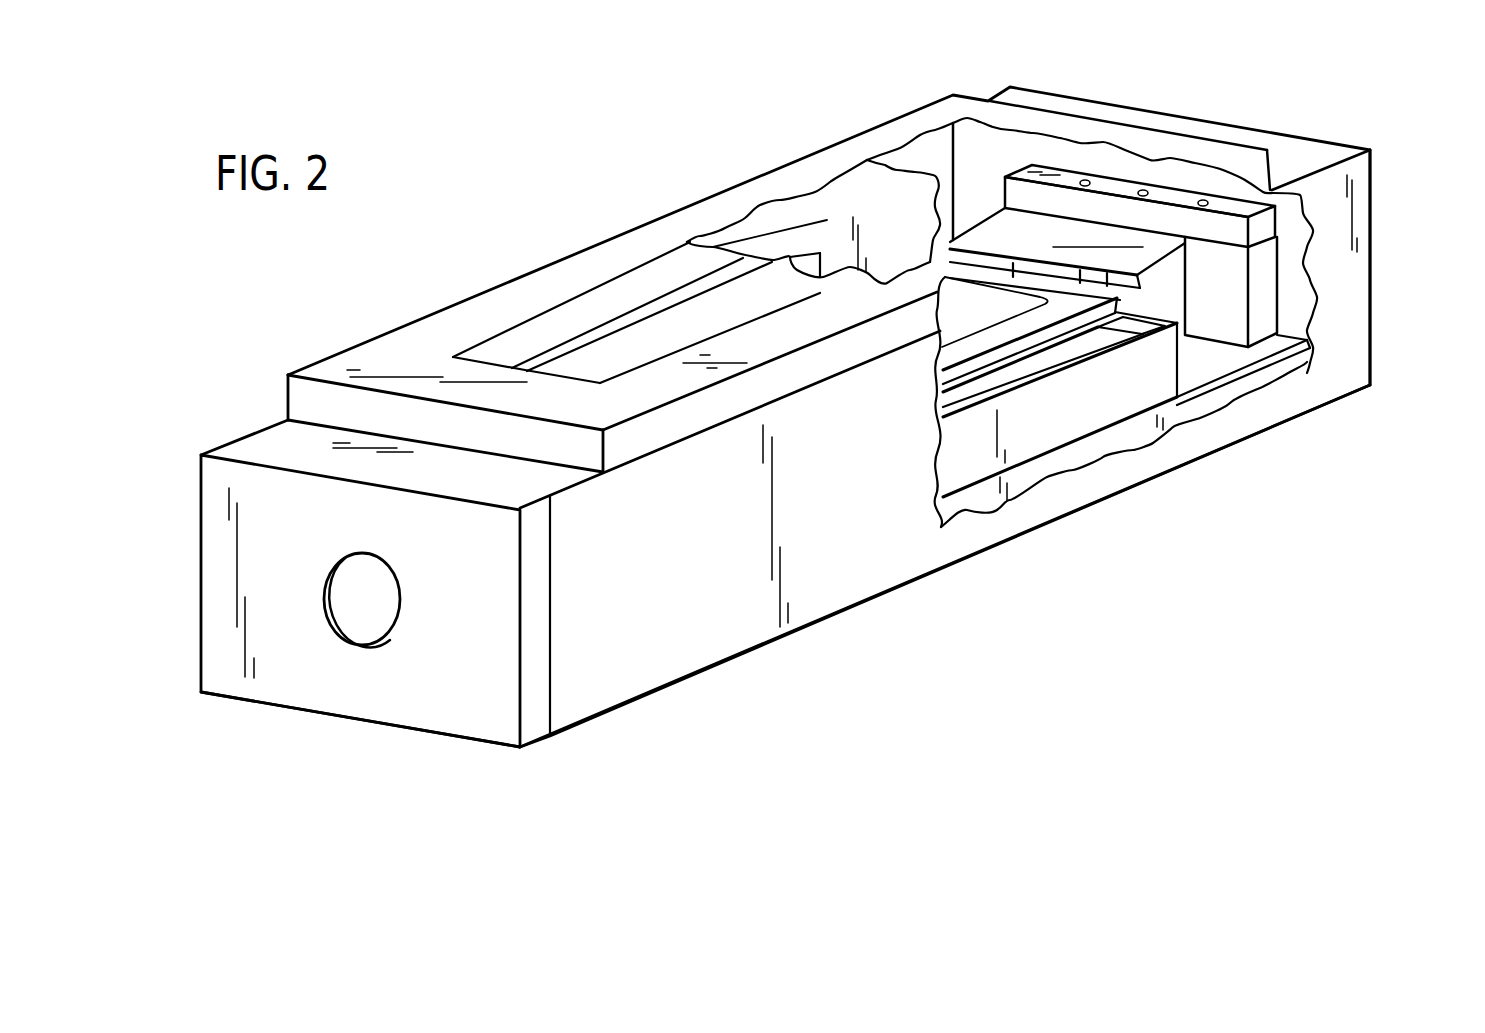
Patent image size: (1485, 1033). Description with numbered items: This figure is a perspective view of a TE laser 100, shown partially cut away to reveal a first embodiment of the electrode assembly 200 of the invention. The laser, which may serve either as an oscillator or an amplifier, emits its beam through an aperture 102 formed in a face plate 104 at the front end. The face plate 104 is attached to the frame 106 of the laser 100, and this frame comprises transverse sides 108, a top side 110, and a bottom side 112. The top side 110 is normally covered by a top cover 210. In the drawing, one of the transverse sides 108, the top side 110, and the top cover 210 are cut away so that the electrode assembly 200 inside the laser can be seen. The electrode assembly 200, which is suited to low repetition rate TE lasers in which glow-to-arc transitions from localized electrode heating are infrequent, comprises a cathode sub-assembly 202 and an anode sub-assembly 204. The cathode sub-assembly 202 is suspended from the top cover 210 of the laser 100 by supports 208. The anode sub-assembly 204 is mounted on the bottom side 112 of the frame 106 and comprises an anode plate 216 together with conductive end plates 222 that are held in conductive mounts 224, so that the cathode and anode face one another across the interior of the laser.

The TE laser 100 is at (1078, 647).
The aperture 102 is at (332, 597).
The face plate 104 is at (415, 703).
The frame 106 is at (828, 645).
The transverse sides 108 is at (720, 645).
The top side 110 is at (280, 430).
The bottom side 112 is at (601, 720).
The electrode assembly 200 is at (1215, 367).
The cathode sub-assembly 202 is at (895, 243).
The anode sub-assembly 204 is at (1118, 402).
The supports 208 is at (841, 240).
The top cover 210 is at (463, 313).
The anode plate 216 is at (1283, 348).
The conductive end plates 222 is at (1007, 233).
The conductive mounts 224 is at (1267, 287).